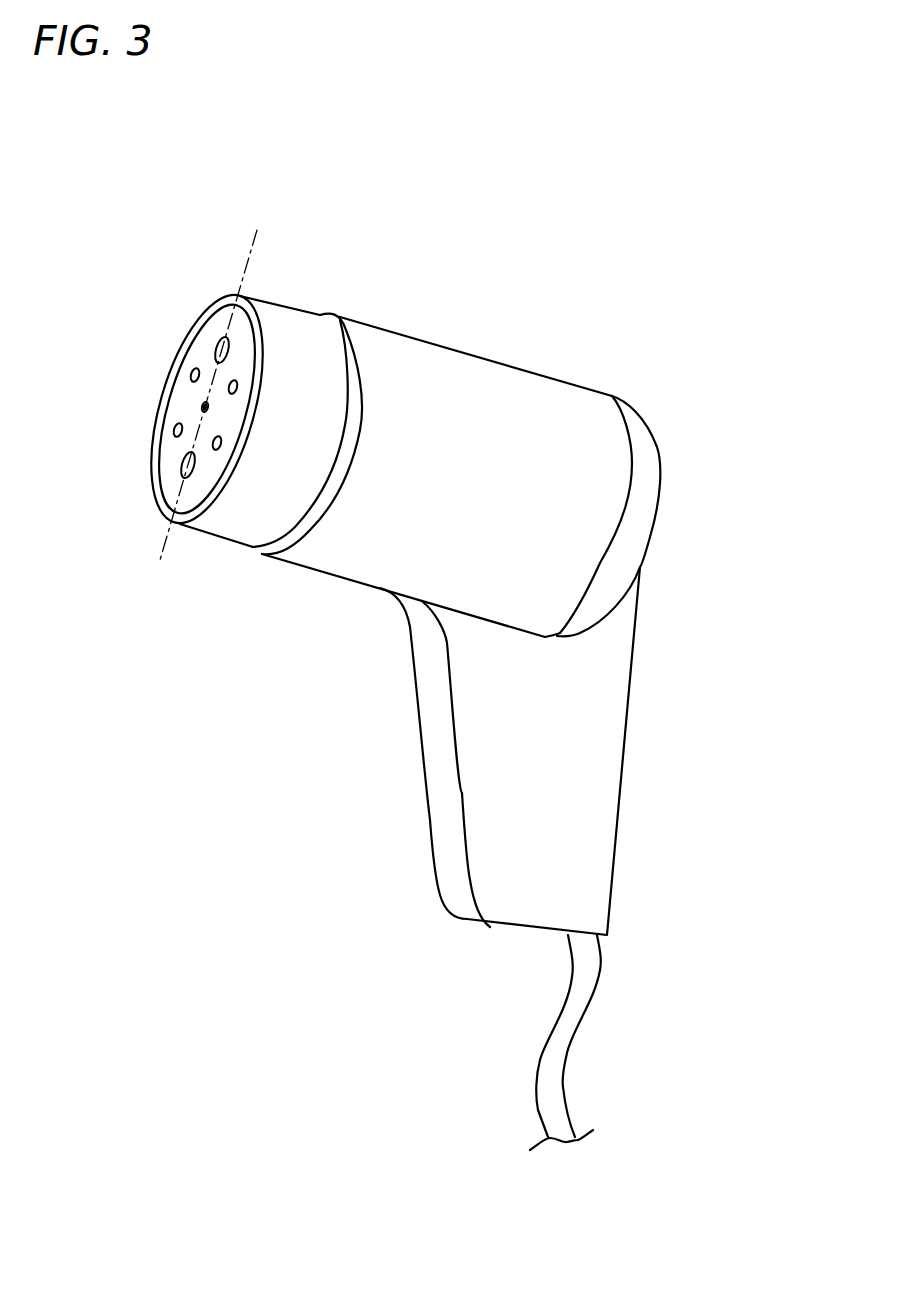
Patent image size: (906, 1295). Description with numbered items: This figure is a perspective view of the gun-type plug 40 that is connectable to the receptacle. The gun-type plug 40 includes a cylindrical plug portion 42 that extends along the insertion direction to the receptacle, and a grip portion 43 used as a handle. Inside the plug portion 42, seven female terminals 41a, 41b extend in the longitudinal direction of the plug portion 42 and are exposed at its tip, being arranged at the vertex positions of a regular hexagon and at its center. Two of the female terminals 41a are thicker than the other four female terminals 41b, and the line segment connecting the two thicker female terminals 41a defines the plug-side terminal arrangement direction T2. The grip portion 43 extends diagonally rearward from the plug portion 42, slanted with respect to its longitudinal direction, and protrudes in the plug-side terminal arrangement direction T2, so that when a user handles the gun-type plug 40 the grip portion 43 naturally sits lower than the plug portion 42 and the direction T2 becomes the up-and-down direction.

The gun-type plug 40 is at (409, 661).
The female terminals 41a is at (182, 465).
The female terminals 41b is at (170, 430).
The plug portion 42 is at (492, 397).
The grip portion 43 is at (583, 787).
The plug-side terminal arrangement direction T2 is at (243, 271).